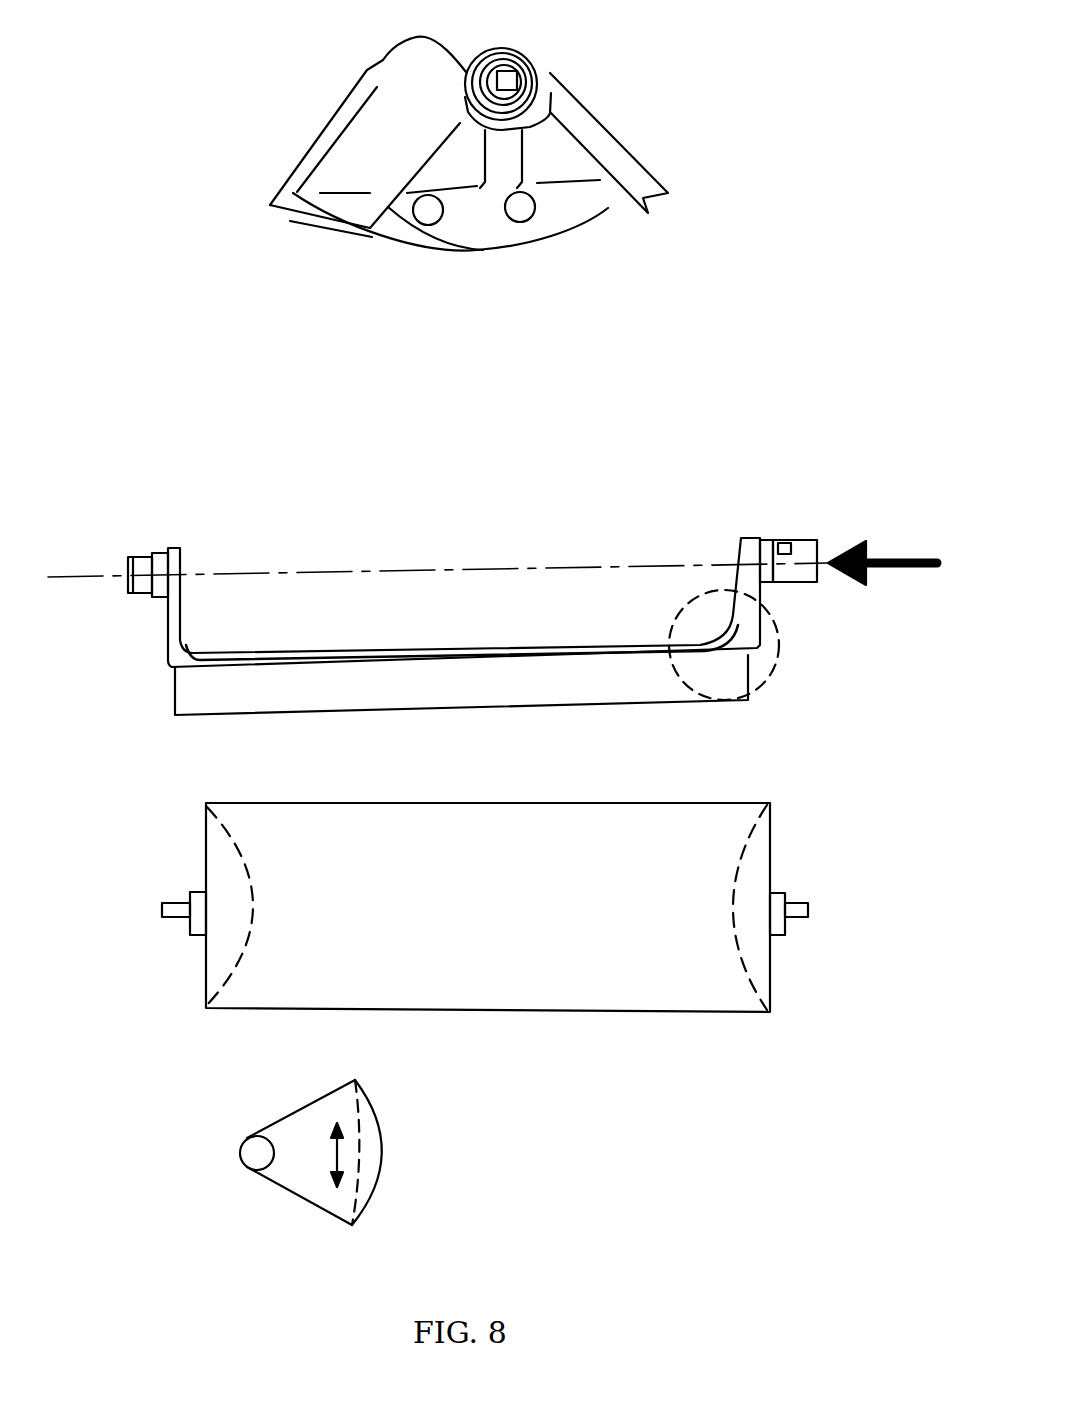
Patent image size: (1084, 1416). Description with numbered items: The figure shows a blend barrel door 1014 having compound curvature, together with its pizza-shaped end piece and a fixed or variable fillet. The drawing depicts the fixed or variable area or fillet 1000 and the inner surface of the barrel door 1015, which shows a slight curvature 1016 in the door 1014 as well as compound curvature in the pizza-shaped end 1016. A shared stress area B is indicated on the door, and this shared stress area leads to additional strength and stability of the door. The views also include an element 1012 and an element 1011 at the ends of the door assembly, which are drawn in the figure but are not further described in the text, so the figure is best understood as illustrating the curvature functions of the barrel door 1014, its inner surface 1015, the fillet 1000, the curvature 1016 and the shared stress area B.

The fixed or variable area or fillet 1000 is at (726, 616).
The roller body 1011 is at (540, 155).
The axle bolt 1012 is at (393, 68).
The door 1014 is at (510, 682).
The inner surface of the barrel door 1015 is at (505, 645).
The slight curvature / pizza shaped end 1016 is at (405, 130).
The shared stress area B is at (766, 663).